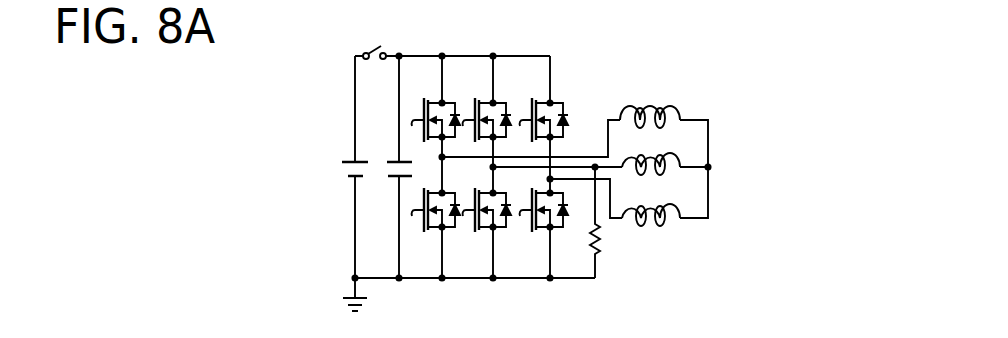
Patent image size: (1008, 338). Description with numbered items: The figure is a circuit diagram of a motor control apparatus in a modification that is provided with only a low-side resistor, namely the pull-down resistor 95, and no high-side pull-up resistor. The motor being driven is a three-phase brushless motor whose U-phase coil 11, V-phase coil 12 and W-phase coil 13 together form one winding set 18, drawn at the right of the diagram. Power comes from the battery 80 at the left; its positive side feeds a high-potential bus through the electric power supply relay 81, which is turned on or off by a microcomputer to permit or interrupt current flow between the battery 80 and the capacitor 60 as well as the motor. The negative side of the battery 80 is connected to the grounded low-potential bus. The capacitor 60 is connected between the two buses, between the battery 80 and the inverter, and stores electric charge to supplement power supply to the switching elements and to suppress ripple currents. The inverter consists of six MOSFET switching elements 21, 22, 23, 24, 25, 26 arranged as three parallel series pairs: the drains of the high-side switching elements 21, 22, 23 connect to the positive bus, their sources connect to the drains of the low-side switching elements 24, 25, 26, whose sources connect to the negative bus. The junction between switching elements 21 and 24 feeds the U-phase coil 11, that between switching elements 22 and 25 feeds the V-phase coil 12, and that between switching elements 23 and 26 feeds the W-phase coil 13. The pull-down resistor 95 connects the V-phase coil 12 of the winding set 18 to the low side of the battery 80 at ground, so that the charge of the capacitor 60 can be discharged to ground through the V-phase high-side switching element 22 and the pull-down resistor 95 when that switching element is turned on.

The U-phase coil 11 is at (670, 104).
The V-phase coil 12 is at (670, 152).
The W-phase coil 13 is at (669, 204).
The winding set 18 is at (665, 188).
The switching element 21 is at (447, 102).
The switching element 22 is at (497, 102).
The switching element 23 is at (554, 102).
The switching element 24 is at (447, 229).
The switching element 25 is at (498, 229).
The switching element 26 is at (555, 229).
The capacitor 60 is at (390, 160).
The battery 80 is at (345, 160).
The electric power supply relay 81 is at (363, 49).
The pull-down resistor 95 is at (598, 236).